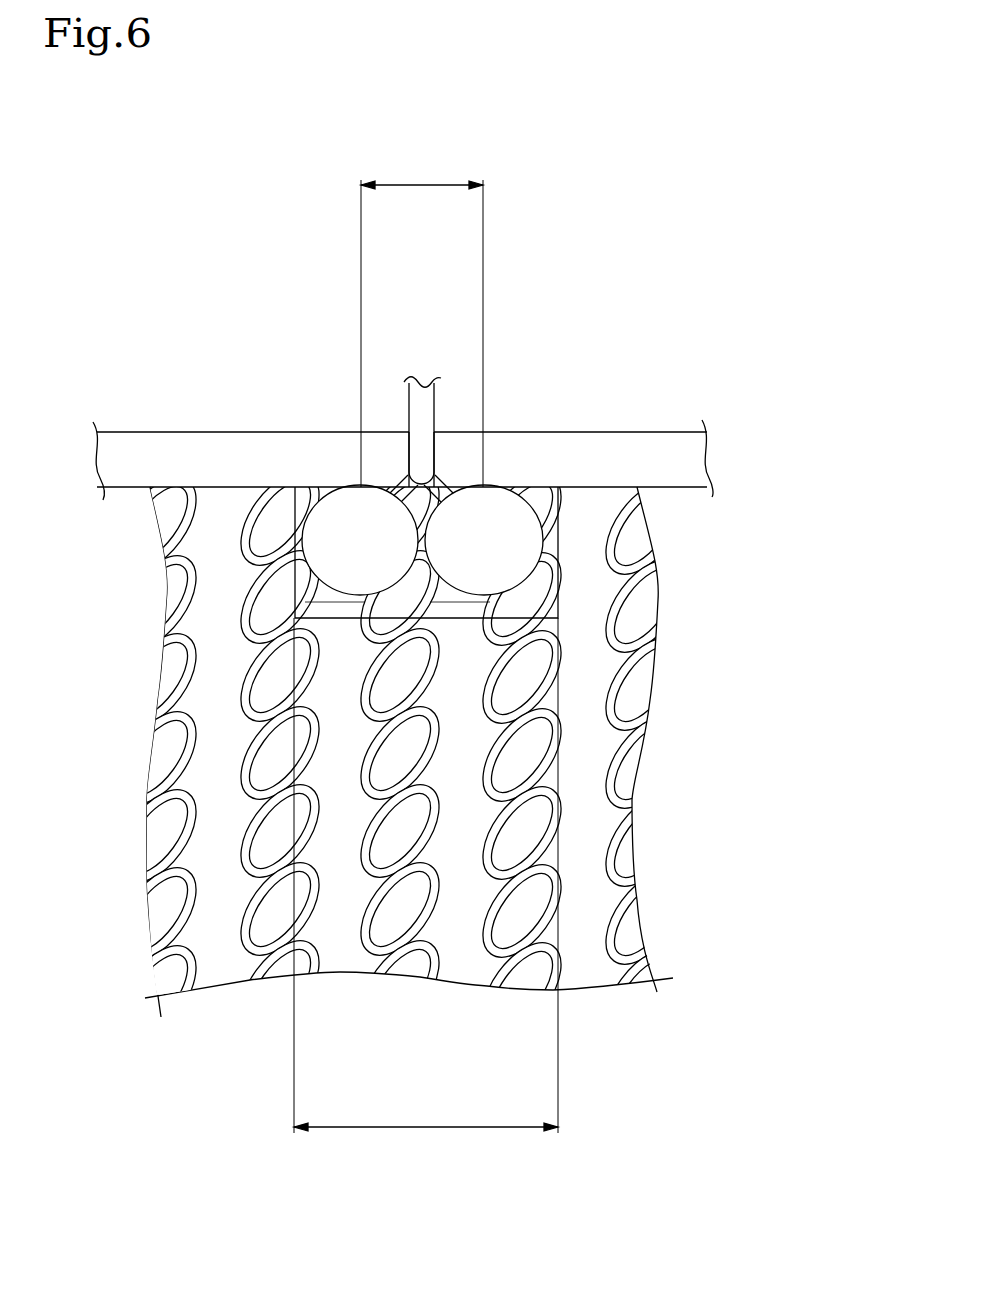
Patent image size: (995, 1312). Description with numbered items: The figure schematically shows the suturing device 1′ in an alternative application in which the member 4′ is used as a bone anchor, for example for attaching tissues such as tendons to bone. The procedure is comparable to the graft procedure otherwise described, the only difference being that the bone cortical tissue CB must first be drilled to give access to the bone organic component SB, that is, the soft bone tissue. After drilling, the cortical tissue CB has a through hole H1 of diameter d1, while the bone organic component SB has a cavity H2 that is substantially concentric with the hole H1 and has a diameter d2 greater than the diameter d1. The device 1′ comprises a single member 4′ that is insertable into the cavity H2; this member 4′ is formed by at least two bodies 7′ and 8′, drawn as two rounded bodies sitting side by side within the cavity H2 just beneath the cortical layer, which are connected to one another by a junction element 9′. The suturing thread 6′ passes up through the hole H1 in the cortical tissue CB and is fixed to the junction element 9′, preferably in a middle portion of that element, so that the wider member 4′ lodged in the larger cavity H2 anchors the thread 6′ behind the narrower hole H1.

The device 1′ is at (672, 264).
The member 4′ is at (300, 527).
The suturing thread 6′ is at (428, 396).
The body 7′ is at (344, 550).
The body 8′ is at (468, 550).
The junction element 9′ is at (385, 465).
The through hole H1 is at (463, 450).
The cavity H2 is at (340, 608).
The bone cortical tissue CB is at (677, 450).
The bone organic component SB is at (583, 672).
The diameter of the through hole d1 is at (421, 183).
The diameter of the cavity d2 is at (421, 1128).